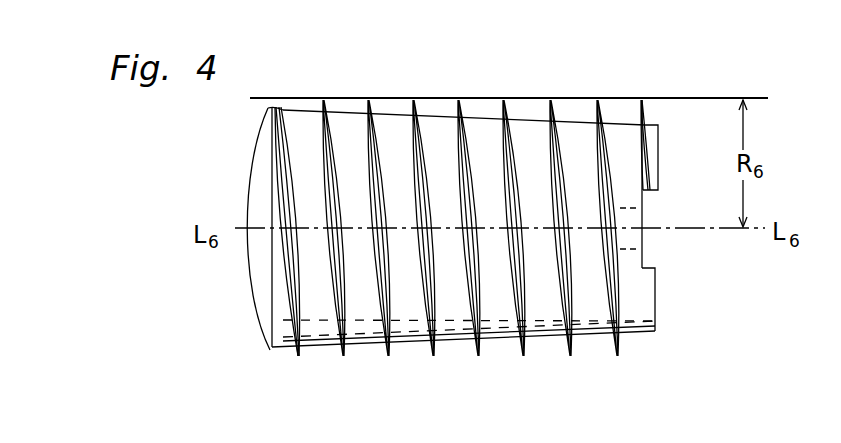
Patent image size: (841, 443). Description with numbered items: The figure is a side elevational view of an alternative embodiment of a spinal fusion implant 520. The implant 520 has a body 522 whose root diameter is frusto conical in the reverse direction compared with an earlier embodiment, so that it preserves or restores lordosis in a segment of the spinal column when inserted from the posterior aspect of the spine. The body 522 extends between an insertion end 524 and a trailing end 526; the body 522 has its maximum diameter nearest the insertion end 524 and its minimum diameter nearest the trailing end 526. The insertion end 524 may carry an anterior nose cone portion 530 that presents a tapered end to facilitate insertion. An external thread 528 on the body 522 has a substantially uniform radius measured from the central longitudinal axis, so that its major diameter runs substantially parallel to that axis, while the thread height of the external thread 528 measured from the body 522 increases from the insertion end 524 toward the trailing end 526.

The spinal fusion implant 520 is at (240, 168).
The body 522 is at (463, 326).
The insertion end 524 is at (283, 350).
The trailing end 526 is at (660, 301).
The external thread 528 is at (385, 332).
The anterior nose cone portion 530 is at (250, 291).